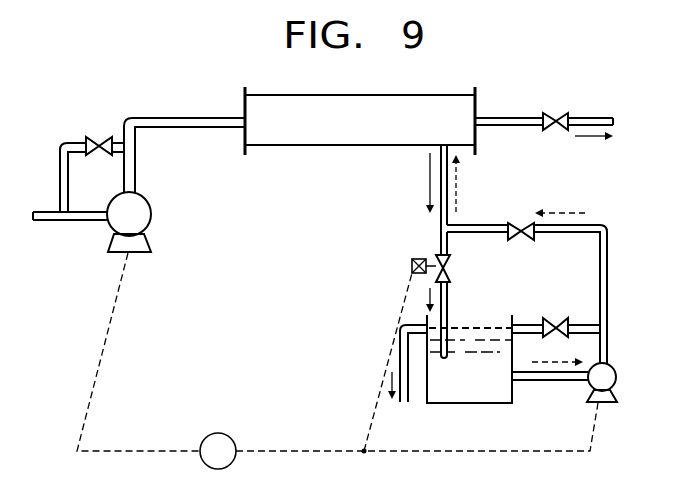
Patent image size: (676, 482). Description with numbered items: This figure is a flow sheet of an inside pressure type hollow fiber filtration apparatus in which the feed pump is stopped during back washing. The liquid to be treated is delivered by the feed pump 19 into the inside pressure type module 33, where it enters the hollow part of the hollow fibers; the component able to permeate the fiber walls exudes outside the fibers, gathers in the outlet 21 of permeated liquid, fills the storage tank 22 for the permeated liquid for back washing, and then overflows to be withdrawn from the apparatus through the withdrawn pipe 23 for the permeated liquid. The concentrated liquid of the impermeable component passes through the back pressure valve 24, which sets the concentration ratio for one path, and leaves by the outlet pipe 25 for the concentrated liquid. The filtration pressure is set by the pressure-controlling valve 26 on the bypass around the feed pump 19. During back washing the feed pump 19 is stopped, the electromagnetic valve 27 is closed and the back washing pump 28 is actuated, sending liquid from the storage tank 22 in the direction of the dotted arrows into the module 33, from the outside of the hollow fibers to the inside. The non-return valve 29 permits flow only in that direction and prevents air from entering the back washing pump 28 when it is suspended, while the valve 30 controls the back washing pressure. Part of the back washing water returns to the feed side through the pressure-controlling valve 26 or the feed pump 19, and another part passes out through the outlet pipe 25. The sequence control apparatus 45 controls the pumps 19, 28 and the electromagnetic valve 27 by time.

The feed pump 19 is at (151, 214).
The outlet of permeated liquid 21 is at (447, 150).
The storage tank for the permeated liquid for back washing 22 is at (478, 403).
The withdrawn pipe for the permeated liquid 23 is at (409, 393).
The back pressure valve 24 is at (555, 114).
The outlet pipe for the concentrated liquid 25 is at (603, 118).
The pressure-controlling valve 26 is at (102, 137).
The electromagnetic valve 27 is at (412, 266).
The back washing pump 28 is at (616, 378).
The non-return valve 29 is at (522, 222).
The valve for controlling a back washing pressure 30 is at (558, 318).
The inside pressure type module 33 is at (345, 147).
The sequence control apparatus 45 is at (219, 433).